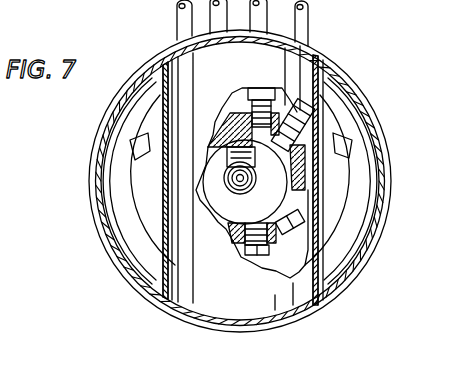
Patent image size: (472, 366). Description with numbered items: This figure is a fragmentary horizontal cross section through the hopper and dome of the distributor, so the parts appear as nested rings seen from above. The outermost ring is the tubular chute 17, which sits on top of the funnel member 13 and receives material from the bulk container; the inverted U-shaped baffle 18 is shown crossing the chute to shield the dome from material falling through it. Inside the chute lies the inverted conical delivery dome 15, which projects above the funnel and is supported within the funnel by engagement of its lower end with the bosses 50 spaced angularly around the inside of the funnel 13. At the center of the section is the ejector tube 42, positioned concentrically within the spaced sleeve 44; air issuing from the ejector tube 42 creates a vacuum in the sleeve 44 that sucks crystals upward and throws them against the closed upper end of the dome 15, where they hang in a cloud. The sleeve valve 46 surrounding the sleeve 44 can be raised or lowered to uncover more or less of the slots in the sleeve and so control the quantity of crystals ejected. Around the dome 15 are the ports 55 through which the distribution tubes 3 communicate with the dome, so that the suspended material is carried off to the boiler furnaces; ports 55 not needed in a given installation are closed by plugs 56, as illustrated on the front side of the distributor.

The distribution tubes 3 is at (258, 17).
The chemical feeding funnel member 13 is at (364, 153).
The inverted conical delivery dome 15 is at (305, 173).
The tubular chute 17 is at (363, 93).
The inverted U-shaped baffle 18 is at (300, 62).
The ejector tube 42 is at (215, 196).
The sleeve 44 is at (228, 192).
The sleeve valve 46 is at (236, 182).
The bosses 50 is at (135, 145).
The ports 55 is at (284, 197).
The plugs 56 is at (300, 226).